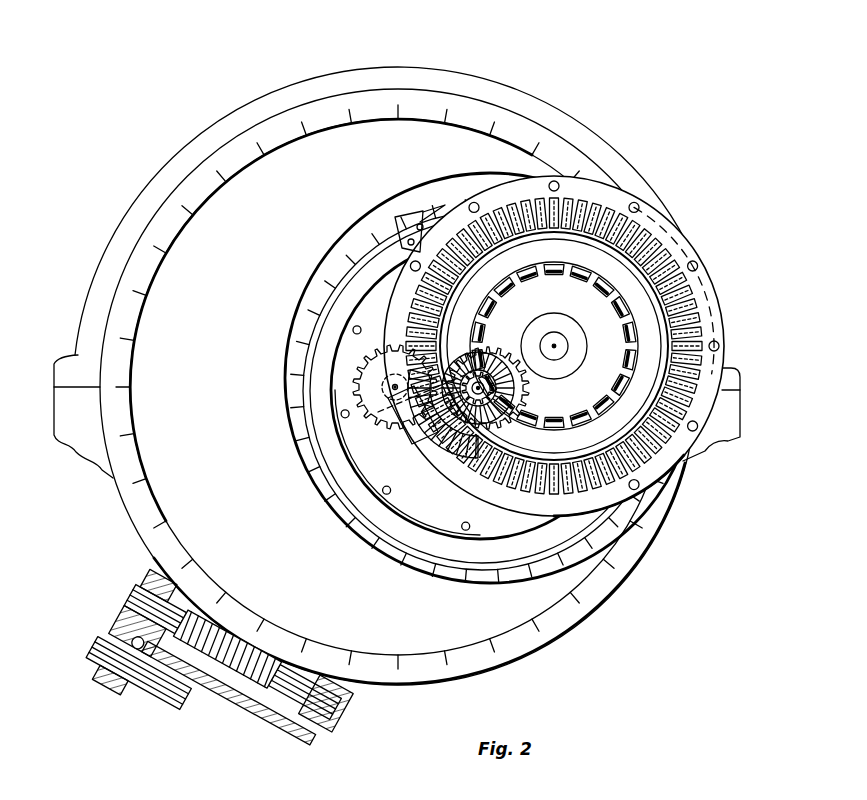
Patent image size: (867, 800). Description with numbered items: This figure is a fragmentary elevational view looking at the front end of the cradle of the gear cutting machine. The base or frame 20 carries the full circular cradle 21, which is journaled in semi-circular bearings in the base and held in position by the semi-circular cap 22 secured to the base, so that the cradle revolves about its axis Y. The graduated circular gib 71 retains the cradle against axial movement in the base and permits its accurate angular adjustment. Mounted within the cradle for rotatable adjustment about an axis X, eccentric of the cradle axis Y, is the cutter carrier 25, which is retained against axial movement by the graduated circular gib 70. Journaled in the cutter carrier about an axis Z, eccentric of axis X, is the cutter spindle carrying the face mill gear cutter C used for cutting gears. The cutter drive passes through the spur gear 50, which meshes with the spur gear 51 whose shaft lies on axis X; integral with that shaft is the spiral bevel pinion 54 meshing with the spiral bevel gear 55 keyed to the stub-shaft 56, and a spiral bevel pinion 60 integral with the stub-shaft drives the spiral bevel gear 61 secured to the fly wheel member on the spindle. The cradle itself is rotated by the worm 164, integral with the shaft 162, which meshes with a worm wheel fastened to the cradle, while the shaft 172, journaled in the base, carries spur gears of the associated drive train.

The base or frame 20 is at (73, 430).
The cradle 21 is at (363, 357).
The semi-circular cap 22 is at (575, 139).
The circular gib 71 is at (385, 102).
The circular gib 70 is at (393, 553).
The cutter carrier 25 is at (470, 550).
The spiral bevel gear 61 is at (533, 475).
The spur gear 51 is at (500, 423).
The face mill gear cutter C is at (630, 380).
The axis of the cutter spindle Z is at (556, 345).
The spur gear 50 is at (376, 412).
The axis of the cradle Y is at (394, 384).
The spiral bevel pinion 54 is at (486, 372).
The axis of the cutter carrier X is at (477, 360).
The spiral bevel gear 55 is at (490, 440).
The spiral bevel pinion 60 is at (460, 440).
The stub-shaft 56 is at (417, 437).
The shaft 162 is at (325, 708).
The worm 164 is at (235, 672).
The shaft 172 is at (157, 683).